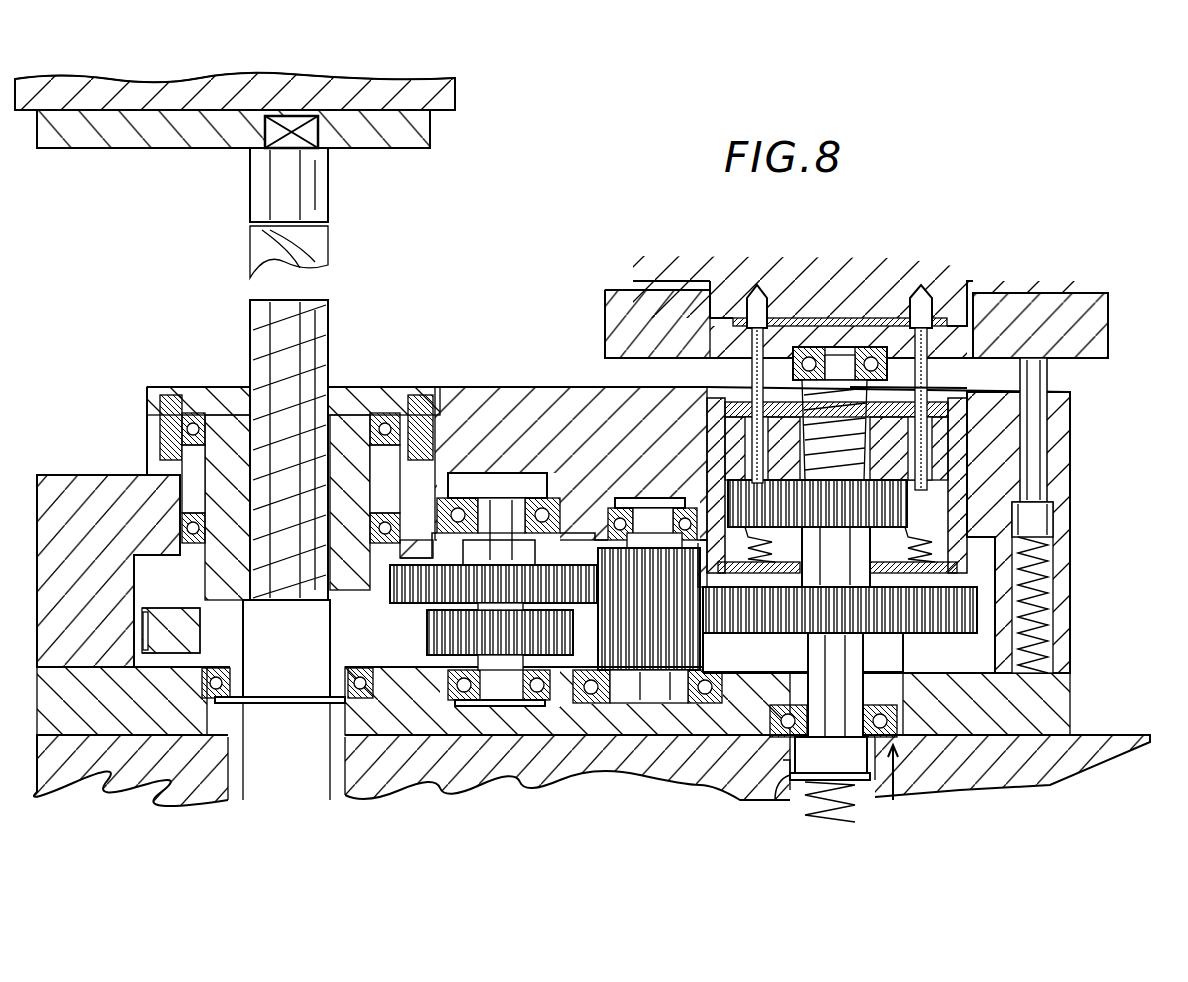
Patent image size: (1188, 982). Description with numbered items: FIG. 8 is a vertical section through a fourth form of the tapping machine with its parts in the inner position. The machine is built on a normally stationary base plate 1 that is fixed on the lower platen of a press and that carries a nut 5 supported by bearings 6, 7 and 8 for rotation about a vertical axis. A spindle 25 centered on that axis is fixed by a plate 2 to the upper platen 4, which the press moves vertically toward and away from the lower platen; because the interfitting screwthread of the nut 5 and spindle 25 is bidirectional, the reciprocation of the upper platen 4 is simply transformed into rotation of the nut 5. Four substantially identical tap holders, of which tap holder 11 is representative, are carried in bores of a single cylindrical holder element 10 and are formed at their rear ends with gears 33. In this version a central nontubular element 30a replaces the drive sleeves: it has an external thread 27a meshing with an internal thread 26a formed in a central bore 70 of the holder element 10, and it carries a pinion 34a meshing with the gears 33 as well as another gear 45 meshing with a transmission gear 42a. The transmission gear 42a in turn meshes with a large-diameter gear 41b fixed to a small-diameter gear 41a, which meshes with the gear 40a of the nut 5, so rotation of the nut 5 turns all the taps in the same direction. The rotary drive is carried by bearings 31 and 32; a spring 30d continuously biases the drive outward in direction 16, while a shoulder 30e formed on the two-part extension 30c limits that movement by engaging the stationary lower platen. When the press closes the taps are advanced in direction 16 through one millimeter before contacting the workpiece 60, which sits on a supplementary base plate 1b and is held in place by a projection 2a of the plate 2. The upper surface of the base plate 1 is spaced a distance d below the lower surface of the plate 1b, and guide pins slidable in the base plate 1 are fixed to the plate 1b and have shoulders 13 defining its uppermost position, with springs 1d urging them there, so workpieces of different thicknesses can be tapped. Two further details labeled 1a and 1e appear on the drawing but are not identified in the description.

The upper platen 4 is at (437, 96).
The plate 2 is at (410, 137).
The spindle 25 is at (312, 248).
The nut 5 is at (345, 630).
The bearing 6 is at (165, 425).
The bearing 7 is at (183, 525).
The bearing 8 is at (210, 690).
The gear of the nut 40a is at (415, 630).
The large-diameter gear 41b is at (580, 550).
The small-diameter gear 41a is at (560, 640).
The transmission gear 42a is at (635, 650).
The projection 2a is at (1052, 272).
The supplementary base plate 1b is at (1078, 320).
The thin plate 1a is at (1105, 345).
The distance d is at (1092, 358).
The external thread 27a is at (860, 370).
The central bore 70 is at (832, 360).
The workpiece 60 is at (792, 320).
The bearing 31 is at (918, 300).
The internal thread 26a is at (940, 392).
The pinion 34a is at (940, 550).
The gear 33 is at (712, 480).
The tap holder 11 is at (748, 450).
The central nontubular element 30a is at (850, 570).
The gear 45 is at (930, 620).
The extension 30c is at (805, 690).
The shoulder 30e is at (795, 770).
The spring 30d is at (830, 825).
The bearing 32 is at (760, 760).
The direction 16 is at (898, 790).
The base plate 1 is at (1062, 418).
The cavity 1e is at (1015, 528).
The holder element 10 is at (1035, 497).
The shoulder 13 is at (1010, 460).
The spring 1d is at (1045, 640).